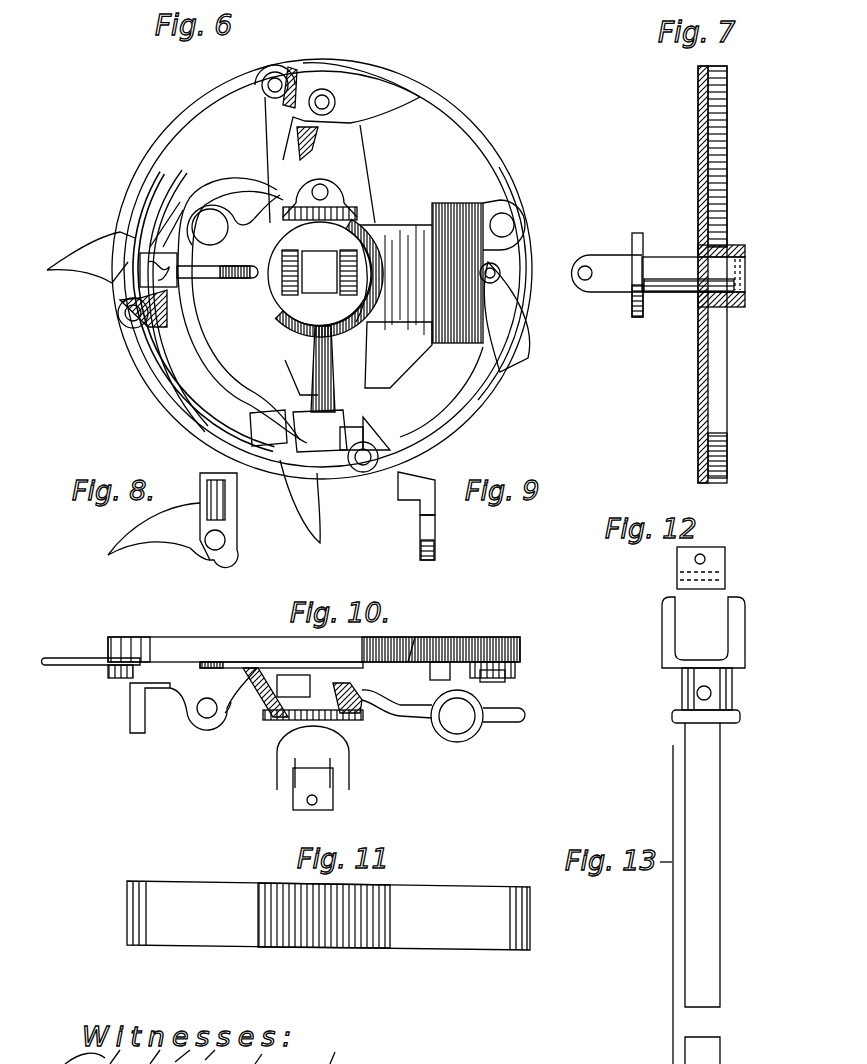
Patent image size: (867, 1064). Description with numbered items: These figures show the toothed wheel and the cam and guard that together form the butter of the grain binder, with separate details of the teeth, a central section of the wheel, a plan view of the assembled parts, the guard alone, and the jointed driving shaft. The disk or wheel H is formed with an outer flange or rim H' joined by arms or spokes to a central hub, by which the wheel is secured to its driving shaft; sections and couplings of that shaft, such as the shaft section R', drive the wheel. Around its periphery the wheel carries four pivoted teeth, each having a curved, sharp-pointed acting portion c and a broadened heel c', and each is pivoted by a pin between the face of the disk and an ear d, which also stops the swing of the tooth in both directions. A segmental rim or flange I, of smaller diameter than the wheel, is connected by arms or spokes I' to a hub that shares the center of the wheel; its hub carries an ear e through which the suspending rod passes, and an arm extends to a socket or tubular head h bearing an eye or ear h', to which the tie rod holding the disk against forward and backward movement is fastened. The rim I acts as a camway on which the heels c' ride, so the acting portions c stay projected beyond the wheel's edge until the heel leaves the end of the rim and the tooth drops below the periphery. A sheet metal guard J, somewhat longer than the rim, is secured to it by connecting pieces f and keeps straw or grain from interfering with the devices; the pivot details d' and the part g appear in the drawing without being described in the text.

In FIG. 6, the disk or wheel H is at (322, 269).
In FIG. 7, the disk or wheel H is at (730, 185).
In FIG. 10, the disk or wheel H is at (314, 639).
In FIG. 6, the outer flange or rim H′ is at (322, 269).
In FIG. 10, the outer flange or rim H′ is at (281, 653).
In FIG. 13, the shaft section and coupling R′ is at (720, 855).
In FIG. 6, the segmental rim or flange I is at (203, 311).
In FIG. 6, the arms or spokes I′ is at (252, 295).
In FIG. 10, the arms or spokes I′ is at (291, 704).
In FIG. 6, the guard J is at (520, 345).
In FIG. 11, the guard J is at (328, 915).
In FIG. 6, the acting portion of tooth c is at (288, 303).
In FIG. 8, the acting portion of tooth c is at (159, 531).
In FIG. 9, the acting portion of tooth c is at (435, 537).
In FIG. 10, the acting portion of tooth c is at (417, 625).
In FIG. 6, the heel or rear portion of tooth c′ is at (281, 340).
In FIG. 8, the heel or rear portion of tooth c′ is at (228, 520).
In FIG. 9, the heel or rear portion of tooth c′ is at (416, 493).
In FIG. 10, the heel or rear portion of tooth c′ is at (311, 671).
In FIG. 6, the ear or support d is at (245, 268).
In FIG. 10, the ear or support d is at (317, 701).
In FIG. 6, the pivot pin d′ is at (404, 178).
In FIG. 10, the pivot pin d′ is at (293, 678).
In FIG. 6, the ear or projection e is at (320, 194).
In FIG. 10, the ear or projection e is at (331, 699).
In FIG. 6, the connecting arms or pieces f is at (243, 352).
In FIG. 10, the connecting arms or pieces f is at (166, 705).
In FIG. 6, the spring rod g is at (217, 262).
In FIG. 10, the spring rod g is at (222, 708).
In FIG. 6, the socket or tubular head h is at (434, 273).
In FIG. 10, the socket or tubular head h is at (485, 716).
In FIG. 6, the eye or ear h′ is at (522, 218).